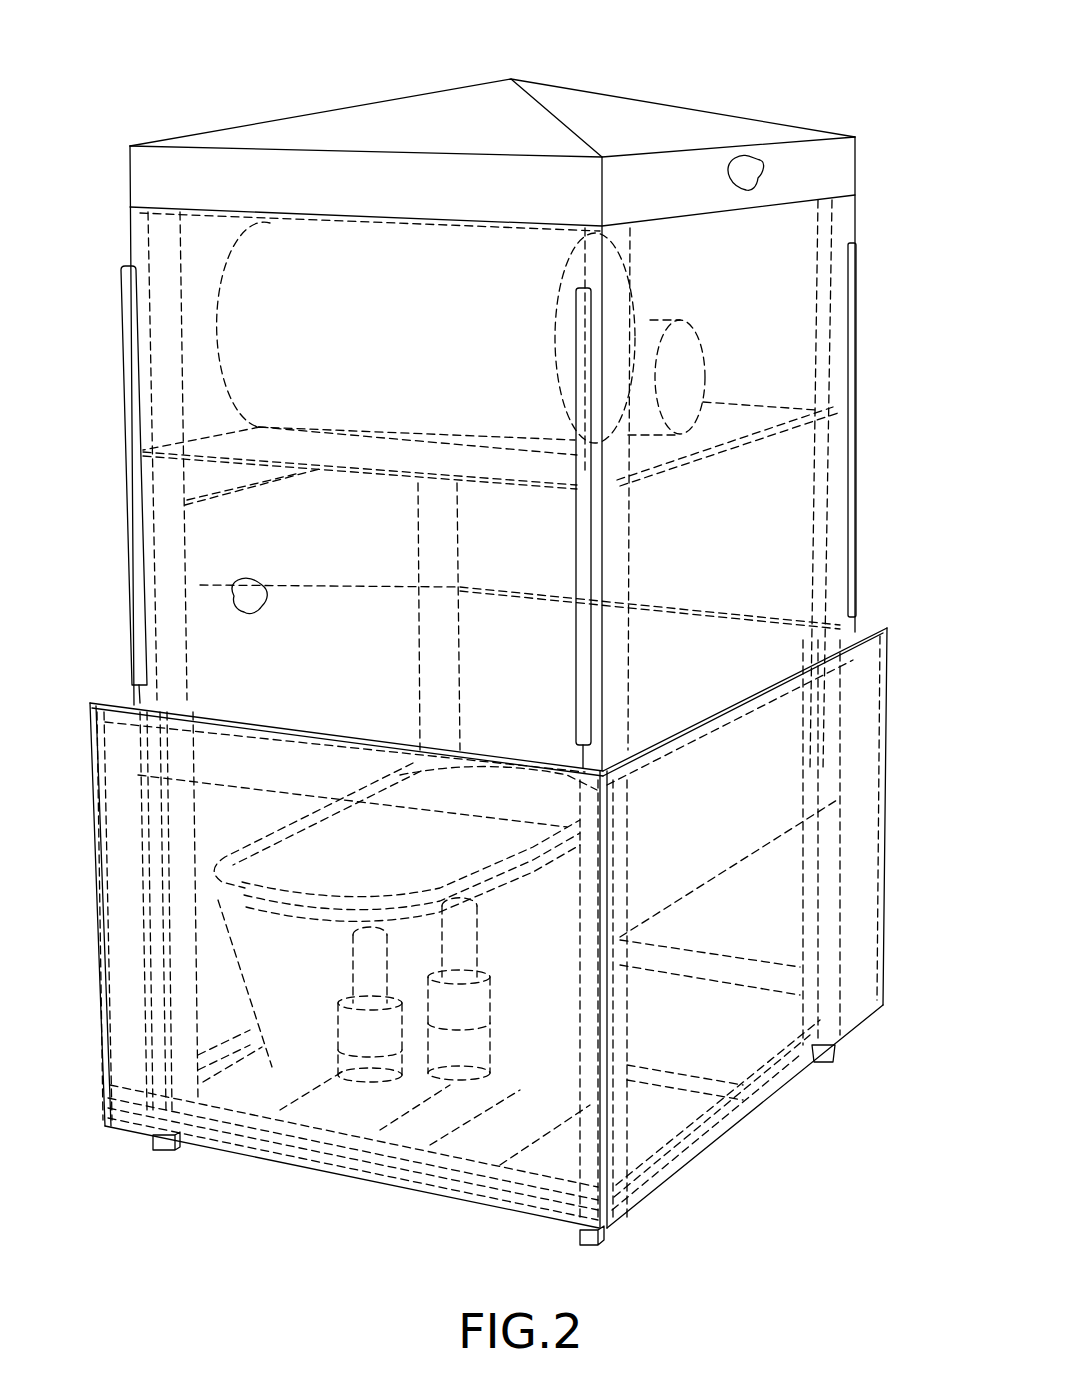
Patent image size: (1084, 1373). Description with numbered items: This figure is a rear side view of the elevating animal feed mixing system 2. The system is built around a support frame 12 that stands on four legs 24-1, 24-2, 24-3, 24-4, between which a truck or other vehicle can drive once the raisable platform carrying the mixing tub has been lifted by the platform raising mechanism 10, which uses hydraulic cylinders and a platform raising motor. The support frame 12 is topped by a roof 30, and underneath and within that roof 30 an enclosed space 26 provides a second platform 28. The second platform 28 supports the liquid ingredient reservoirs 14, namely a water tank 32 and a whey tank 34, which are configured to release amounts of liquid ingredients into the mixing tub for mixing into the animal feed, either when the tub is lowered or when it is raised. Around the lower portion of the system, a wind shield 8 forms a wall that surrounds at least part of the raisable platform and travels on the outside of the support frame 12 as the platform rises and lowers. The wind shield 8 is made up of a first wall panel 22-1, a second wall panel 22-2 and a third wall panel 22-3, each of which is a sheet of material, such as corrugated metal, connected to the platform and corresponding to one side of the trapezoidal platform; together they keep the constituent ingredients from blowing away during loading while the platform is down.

The elevating animal feed mixing system 2 is at (653, 55).
The wind shield 8 is at (499, 936).
The platform raising mechanism 10 is at (140, 540).
The support frame 12 is at (850, 118).
The liquid ingredient reservoirs 14 is at (775, 268).
The first wall panel 22-1 is at (570, 805).
The second wall panel 22-2 is at (828, 730).
The third wall panel 22-3 is at (850, 632).
The leg 24-1 is at (182, 942).
The leg 24-2 is at (617, 1165).
The leg 24-3 is at (822, 1005).
The leg 24-4 is at (432, 677).
The enclosed space 26 is at (746, 175).
The second platform 28 is at (787, 430).
The roof 30 is at (550, 92).
The water tank 32 is at (640, 303).
The whey tank 34 is at (683, 335).